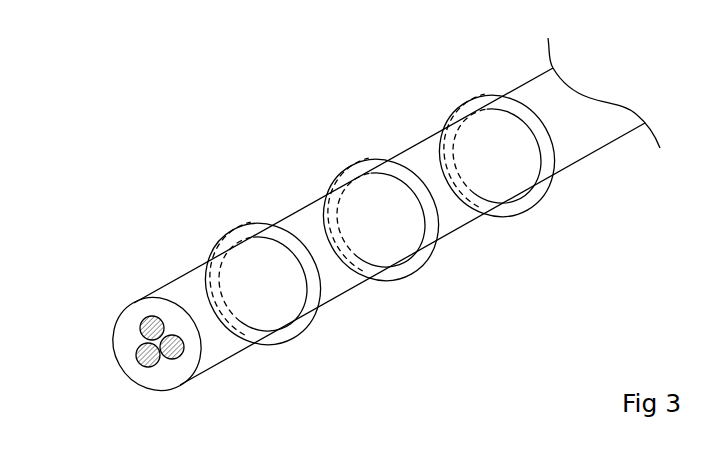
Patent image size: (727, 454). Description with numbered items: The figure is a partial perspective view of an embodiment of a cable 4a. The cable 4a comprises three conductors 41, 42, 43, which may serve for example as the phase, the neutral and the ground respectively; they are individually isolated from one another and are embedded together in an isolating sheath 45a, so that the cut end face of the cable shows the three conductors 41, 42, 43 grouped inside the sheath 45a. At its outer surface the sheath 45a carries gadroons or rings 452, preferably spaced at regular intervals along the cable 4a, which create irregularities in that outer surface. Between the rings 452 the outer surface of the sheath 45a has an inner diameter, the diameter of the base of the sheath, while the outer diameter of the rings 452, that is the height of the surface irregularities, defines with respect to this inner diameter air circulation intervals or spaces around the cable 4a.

The cable 4a is at (344, 232).
The isolating sheath 45a is at (178, 288).
The rings 452 is at (258, 223).
The conductor 41 is at (136, 353).
The conductor 42 is at (170, 358).
The conductor 43 is at (140, 325).